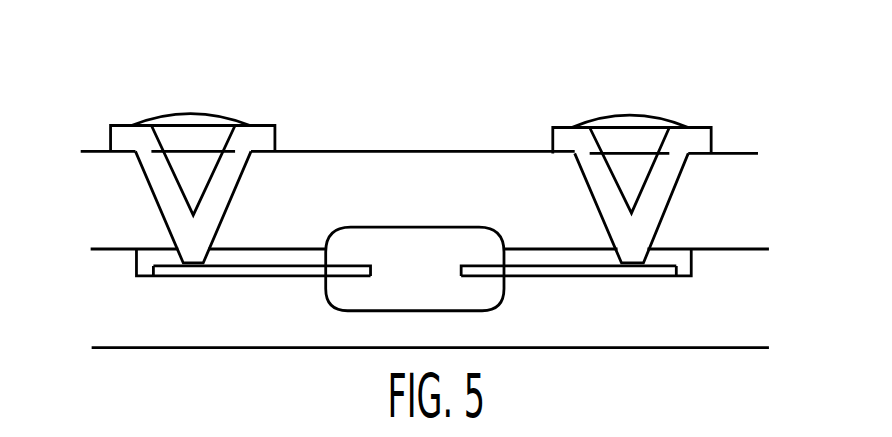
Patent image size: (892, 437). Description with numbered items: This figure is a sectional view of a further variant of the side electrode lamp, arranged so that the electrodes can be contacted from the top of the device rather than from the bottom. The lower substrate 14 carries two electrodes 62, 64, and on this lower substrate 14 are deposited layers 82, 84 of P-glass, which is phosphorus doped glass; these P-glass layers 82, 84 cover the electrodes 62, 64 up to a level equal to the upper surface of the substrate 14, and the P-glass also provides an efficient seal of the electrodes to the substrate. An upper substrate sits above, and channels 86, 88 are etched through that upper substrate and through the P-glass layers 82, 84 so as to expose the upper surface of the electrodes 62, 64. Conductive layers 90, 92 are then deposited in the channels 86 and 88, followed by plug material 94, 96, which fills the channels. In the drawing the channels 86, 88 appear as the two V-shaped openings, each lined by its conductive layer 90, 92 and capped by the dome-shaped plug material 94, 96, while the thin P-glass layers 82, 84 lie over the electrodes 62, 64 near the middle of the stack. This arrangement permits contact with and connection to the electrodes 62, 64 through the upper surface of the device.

The lower substrate 14 is at (678, 333).
The electrode 62 is at (283, 273).
The electrode 64 is at (545, 274).
The P-glass layer 82 is at (270, 247).
The P-glass layer 84 is at (523, 247).
The channel 86 is at (232, 187).
The channel 88 is at (670, 190).
The conductive layer 90 is at (262, 135).
The conductive layer 92 is at (702, 135).
The plug material 94 is at (187, 117).
The plug material 96 is at (637, 120).